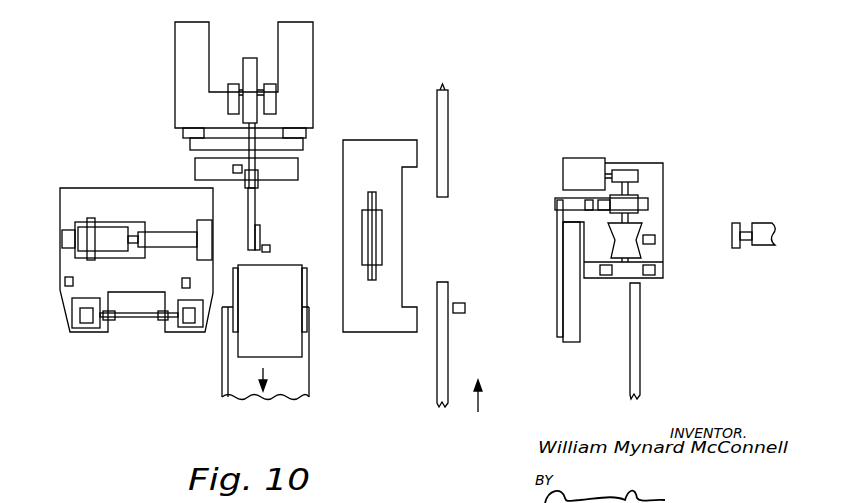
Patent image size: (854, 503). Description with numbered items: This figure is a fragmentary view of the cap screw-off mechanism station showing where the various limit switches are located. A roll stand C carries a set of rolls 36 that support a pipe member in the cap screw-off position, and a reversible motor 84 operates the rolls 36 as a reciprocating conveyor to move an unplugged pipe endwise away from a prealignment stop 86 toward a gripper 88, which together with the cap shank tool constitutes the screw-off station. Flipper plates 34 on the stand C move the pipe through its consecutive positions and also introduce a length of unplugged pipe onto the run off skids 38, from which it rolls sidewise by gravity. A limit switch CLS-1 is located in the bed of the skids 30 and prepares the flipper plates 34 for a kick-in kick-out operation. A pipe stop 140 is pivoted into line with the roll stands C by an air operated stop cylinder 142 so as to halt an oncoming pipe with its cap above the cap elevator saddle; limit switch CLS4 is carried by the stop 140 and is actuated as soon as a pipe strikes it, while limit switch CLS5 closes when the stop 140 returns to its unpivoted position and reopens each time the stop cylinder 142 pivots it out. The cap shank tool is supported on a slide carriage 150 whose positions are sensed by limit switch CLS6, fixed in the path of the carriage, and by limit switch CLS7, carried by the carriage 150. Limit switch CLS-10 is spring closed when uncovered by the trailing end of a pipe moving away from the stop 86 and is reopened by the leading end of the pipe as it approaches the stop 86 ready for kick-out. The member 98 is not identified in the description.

The stop cylinder 142 is at (250, 58).
The pipe stop 140 is at (257, 206).
The limit switch CLS5 is at (233, 169).
The limit switch CLS4 is at (270, 249).
The slide carriage 150 is at (108, 220).
The limit switch CLS6 is at (182, 282).
The limit switch CLS7 is at (66, 288).
The work holder 98 is at (295, 377).
The gripper 88 is at (383, 222).
The run off skids 38 is at (448, 108).
The skids 30 is at (448, 285).
The limit switch CLS-1 is at (465, 308).
The reversible motors 84 is at (580, 158).
The rolls 36 is at (641, 229).
The flipper plates 34 is at (573, 303).
The prealignment stop 86 is at (737, 223).
The limit switch CLS-10 is at (655, 239).
The roll stand C is at (699, 272).